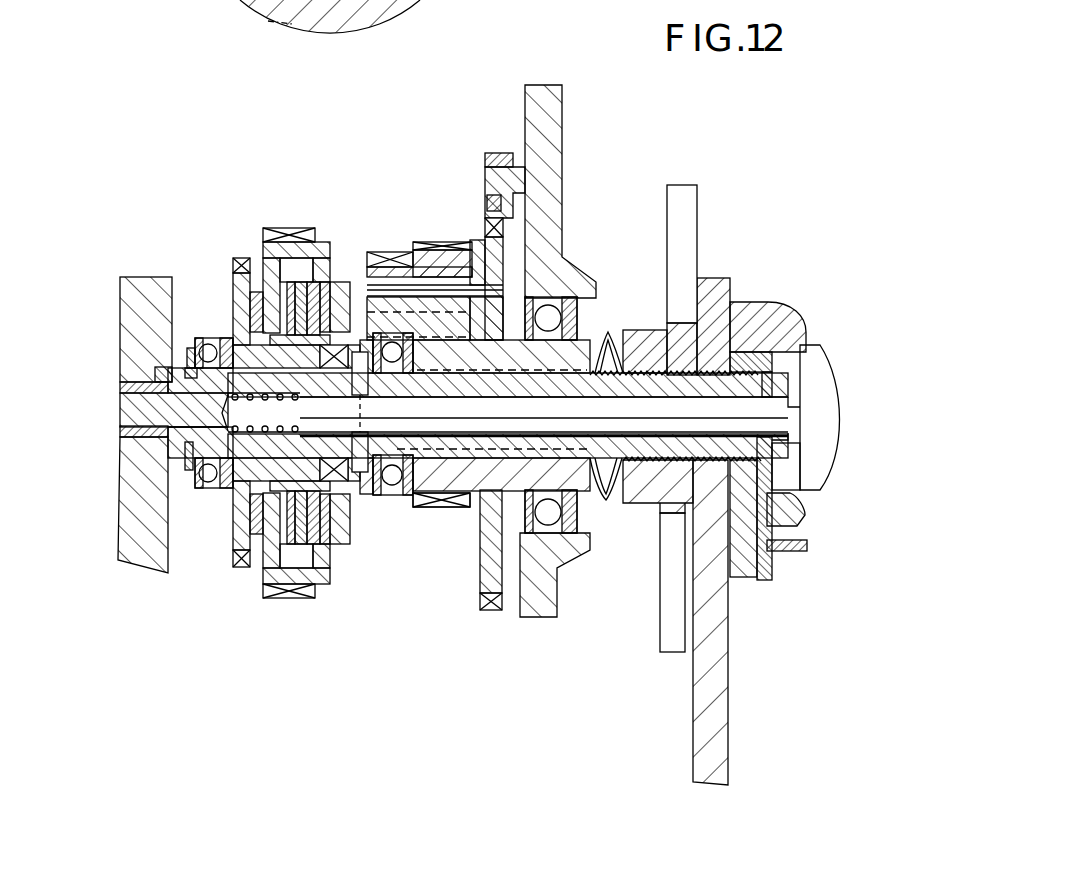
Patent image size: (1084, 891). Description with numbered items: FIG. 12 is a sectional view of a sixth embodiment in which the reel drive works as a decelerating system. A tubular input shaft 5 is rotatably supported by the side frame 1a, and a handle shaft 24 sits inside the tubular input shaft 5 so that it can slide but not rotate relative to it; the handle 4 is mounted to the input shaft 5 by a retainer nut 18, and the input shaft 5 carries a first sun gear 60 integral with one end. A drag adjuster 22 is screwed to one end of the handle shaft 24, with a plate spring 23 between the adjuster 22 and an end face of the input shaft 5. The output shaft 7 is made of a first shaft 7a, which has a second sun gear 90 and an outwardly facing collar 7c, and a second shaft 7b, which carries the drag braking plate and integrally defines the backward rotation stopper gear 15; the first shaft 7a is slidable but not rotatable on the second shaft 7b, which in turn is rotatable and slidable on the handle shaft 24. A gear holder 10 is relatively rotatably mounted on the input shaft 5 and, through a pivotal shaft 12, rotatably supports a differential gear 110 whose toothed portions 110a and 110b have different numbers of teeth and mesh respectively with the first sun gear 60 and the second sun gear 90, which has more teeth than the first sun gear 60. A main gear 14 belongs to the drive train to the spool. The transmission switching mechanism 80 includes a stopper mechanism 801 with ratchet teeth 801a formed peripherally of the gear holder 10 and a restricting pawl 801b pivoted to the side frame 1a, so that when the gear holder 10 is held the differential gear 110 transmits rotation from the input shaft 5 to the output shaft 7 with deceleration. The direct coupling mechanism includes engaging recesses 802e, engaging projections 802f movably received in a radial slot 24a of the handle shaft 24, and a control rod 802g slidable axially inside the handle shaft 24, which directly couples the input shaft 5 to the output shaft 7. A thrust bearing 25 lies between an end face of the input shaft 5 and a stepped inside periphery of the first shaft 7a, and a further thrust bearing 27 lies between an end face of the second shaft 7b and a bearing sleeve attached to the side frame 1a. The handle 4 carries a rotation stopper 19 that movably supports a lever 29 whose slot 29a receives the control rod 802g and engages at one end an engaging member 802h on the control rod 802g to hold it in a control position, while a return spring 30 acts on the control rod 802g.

The side frame 1a is at (130, 300).
The handle 4 is at (702, 718).
The input shaft 5 is at (590, 332).
The output shaft 7 is at (236, 500).
The first shaft 7a is at (377, 540).
The second shaft 7b is at (258, 468).
The outwardly facing collar 7c is at (330, 553).
The gear holder 10 is at (500, 254).
The pivotal shaft 12 is at (456, 290).
The main gear 14 is at (288, 232).
The backward rotation stopper gear 15 is at (240, 258).
The retainer nut 18 is at (760, 360).
The rotation stopper 19 is at (745, 573).
The drag adjuster 22 is at (670, 330).
The plate spring 23 is at (683, 326).
The handle shaft 24 is at (650, 448).
The slot 24a is at (348, 540).
The thrust bearing 25 is at (400, 492).
The thrust bearing 27 is at (203, 337).
The lever 29 is at (772, 518).
The slot 29a is at (772, 442).
The return spring 30 is at (240, 423).
The first sun gear 60 is at (432, 500).
The transmission switching mechanism 80 is at (505, 212).
The second sun gear 90 is at (410, 540).
The differential gear 110 is at (386, 246).
The toothed portion 110a is at (422, 250).
The toothed portion 110b is at (372, 248).
The stopper mechanism 801 is at (479, 208).
The ratchet teeth 801a is at (506, 224).
The restricting pawl 801b is at (520, 212).
The engaging recesses 802e is at (333, 583).
The engaging projections 802f is at (367, 540).
The control rod 802g is at (780, 424).
The engaging member 802h is at (790, 417).